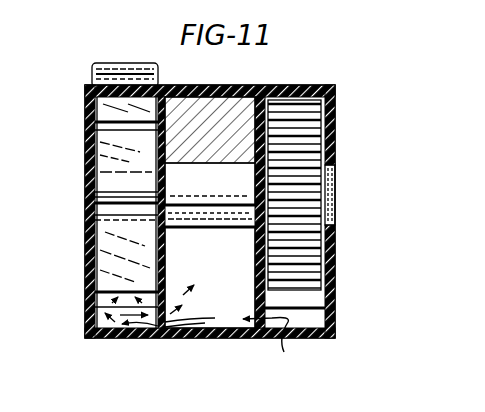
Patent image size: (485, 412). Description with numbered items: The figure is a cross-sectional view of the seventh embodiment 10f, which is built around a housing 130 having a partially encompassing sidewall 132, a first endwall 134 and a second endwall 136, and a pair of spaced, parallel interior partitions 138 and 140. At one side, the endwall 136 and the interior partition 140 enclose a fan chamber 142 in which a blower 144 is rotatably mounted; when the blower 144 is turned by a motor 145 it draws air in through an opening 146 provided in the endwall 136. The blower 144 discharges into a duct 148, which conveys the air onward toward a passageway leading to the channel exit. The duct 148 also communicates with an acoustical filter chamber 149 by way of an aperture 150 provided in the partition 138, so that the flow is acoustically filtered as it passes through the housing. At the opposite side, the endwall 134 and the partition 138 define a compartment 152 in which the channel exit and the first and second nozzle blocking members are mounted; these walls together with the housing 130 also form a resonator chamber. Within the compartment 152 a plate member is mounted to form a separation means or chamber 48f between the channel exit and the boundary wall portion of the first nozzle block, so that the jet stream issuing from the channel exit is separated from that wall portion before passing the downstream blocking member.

The housing 130 is at (308, 93).
The partially encompassing sidewall 132 is at (207, 93).
The first endwall 134 is at (88, 184).
The second endwall 136 is at (337, 131).
The interior partition 138 is at (166, 215).
The interior partition 140 is at (258, 277).
The fan chamber 142 is at (310, 300).
The blower 144 is at (310, 252).
The motor 145 is at (234, 191).
The opening 146 is at (337, 217).
The duct 148 is at (315, 320).
The acoustical filter chamber 149 is at (212, 267).
The aperture 150 is at (185, 311).
The compartment 152 is at (88, 212).
The seventh embodiment 10f is at (165, 349).
The separation chamber 48f is at (280, 347).